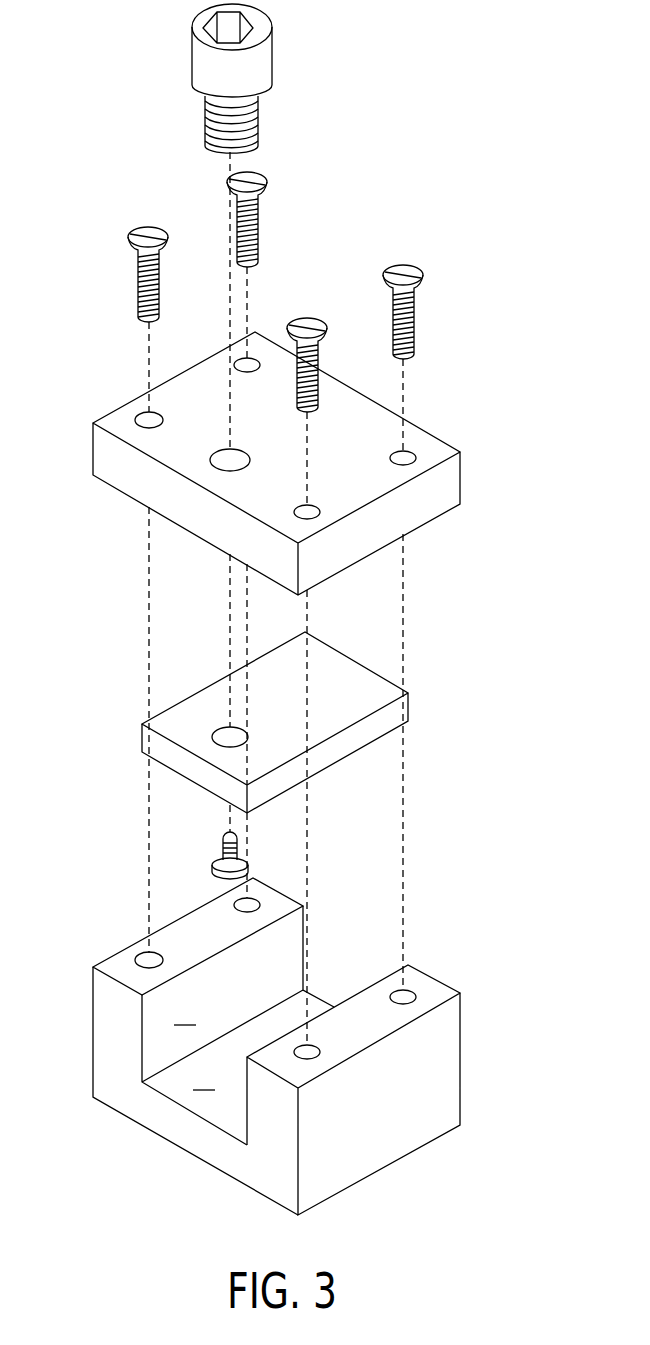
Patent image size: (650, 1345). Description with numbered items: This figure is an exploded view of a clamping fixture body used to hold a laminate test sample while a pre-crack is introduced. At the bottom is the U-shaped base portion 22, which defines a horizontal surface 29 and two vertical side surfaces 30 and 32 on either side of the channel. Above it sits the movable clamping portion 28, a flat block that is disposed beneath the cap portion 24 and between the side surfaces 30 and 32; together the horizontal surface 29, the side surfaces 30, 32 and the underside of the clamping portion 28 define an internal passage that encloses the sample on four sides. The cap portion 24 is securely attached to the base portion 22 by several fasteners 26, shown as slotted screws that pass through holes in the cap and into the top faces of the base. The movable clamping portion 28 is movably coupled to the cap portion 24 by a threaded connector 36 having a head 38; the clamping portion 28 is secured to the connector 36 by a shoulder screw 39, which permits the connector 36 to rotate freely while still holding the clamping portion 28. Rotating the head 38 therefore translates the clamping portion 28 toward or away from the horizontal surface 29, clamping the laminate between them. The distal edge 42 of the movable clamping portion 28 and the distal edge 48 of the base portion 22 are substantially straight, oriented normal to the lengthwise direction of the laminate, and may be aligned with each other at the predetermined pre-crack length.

The U-shaped base portion 22 is at (276, 1055).
The cap portion 24 is at (462, 483).
The fasteners 26 is at (149, 227).
The movable clamping portion 28 is at (273, 722).
The horizontal surface 29 is at (238, 1025).
The vertical side surface 30 is at (198, 952).
The vertical side surface 32 is at (350, 997).
The threaded connector 36 is at (244, 78).
The head 38 is at (272, 56).
The shoulder screw 39 is at (213, 855).
The distal edge 42 is at (162, 762).
The distal edge 48 is at (177, 1108).